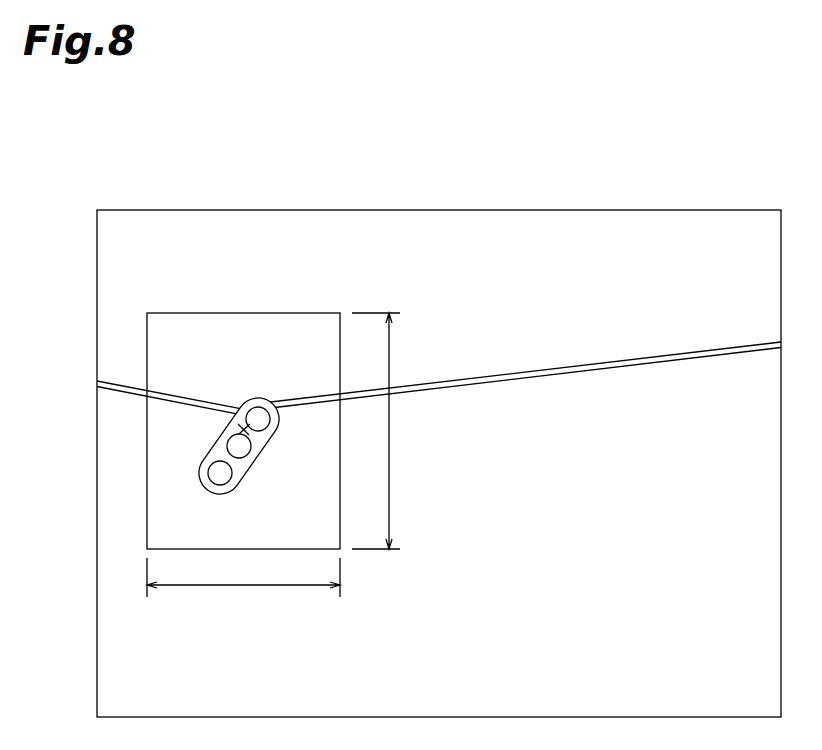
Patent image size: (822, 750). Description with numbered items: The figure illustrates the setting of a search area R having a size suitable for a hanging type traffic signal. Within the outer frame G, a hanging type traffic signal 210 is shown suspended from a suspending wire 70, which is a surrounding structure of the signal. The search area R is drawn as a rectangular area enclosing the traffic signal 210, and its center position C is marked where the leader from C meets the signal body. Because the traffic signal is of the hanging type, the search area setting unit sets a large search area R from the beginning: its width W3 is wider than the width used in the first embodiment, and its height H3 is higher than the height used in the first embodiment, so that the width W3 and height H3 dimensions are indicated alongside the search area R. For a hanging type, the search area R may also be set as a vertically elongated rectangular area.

The glass plate G is at (617, 210).
The search area R is at (202, 313).
The suspending wire 70 is at (563, 370).
The hanging type traffic signal 210 is at (263, 399).
The center position C is at (237, 431).
The height of the search area H3 is at (389, 431).
The width of the search area W3 is at (243, 588).